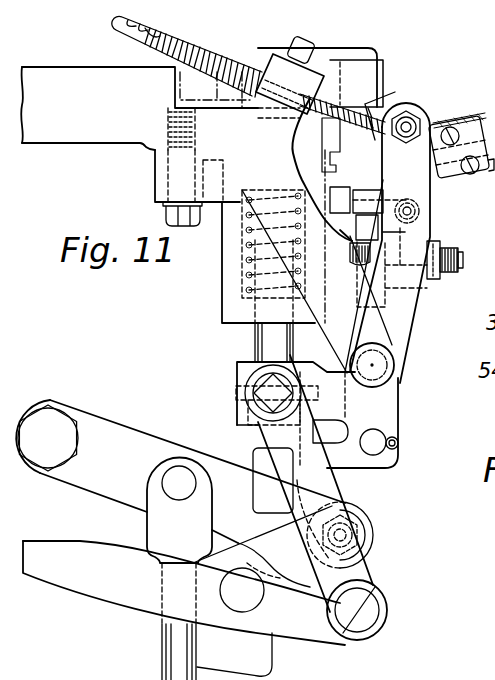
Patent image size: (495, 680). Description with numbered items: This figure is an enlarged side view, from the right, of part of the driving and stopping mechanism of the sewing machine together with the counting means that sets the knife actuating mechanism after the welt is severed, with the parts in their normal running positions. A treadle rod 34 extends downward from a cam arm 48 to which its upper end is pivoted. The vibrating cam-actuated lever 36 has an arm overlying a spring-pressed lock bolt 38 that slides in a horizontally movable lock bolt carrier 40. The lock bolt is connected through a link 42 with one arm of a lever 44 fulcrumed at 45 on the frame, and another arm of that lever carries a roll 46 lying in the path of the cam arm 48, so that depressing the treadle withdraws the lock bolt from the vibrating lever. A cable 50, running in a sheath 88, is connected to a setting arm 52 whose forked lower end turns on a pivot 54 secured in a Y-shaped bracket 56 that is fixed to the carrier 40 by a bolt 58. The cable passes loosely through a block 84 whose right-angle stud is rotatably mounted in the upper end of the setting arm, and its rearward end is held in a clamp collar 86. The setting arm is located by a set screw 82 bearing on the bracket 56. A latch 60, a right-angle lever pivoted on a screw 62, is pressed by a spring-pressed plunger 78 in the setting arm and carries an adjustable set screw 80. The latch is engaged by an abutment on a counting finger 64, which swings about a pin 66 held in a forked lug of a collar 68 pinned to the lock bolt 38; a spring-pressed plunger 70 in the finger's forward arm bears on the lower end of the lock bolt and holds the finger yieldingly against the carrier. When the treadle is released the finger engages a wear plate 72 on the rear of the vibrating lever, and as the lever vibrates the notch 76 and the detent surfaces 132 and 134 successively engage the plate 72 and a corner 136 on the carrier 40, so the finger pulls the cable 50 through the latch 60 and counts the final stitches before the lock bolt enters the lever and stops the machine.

The treadle rod 34 is at (160, 638).
The vibrating cam-actuated lever 36 is at (262, 57).
The lock bolt 38 is at (255, 345).
The lock bolt carrier 40 is at (105, 143).
The link 42 is at (372, 576).
The lever 44 is at (117, 600).
The fulcrum 45 is at (262, 604).
The roll 46 is at (375, 544).
The cam arm 48 is at (117, 494).
The cable 50 is at (133, 33).
The setting arm 52 is at (418, 302).
The pivot 54 is at (396, 371).
The Y-shaped bracket 56 is at (328, 334).
The bolt 58 is at (163, 215).
The latch 60 is at (378, 192).
The screw 62 is at (420, 212).
The counting finger 64 is at (370, 170).
The pin 66 is at (396, 456).
The collar 68 is at (398, 408).
The spring-pressed plunger 70 is at (262, 438).
The wear plate 72 is at (386, 72).
The second lower notch 76 is at (337, 120).
The spring-pressed plunger 78 is at (353, 240).
The adjustable set screw 80 is at (463, 270).
The set screw 82 is at (447, 258).
The block 84 is at (428, 118).
The clamp collar 86 is at (459, 128).
The sheath 88 is at (180, 36).
The detent surface 132 is at (322, 158).
The detent surface 134 is at (322, 166).
The corner 136 is at (322, 140).